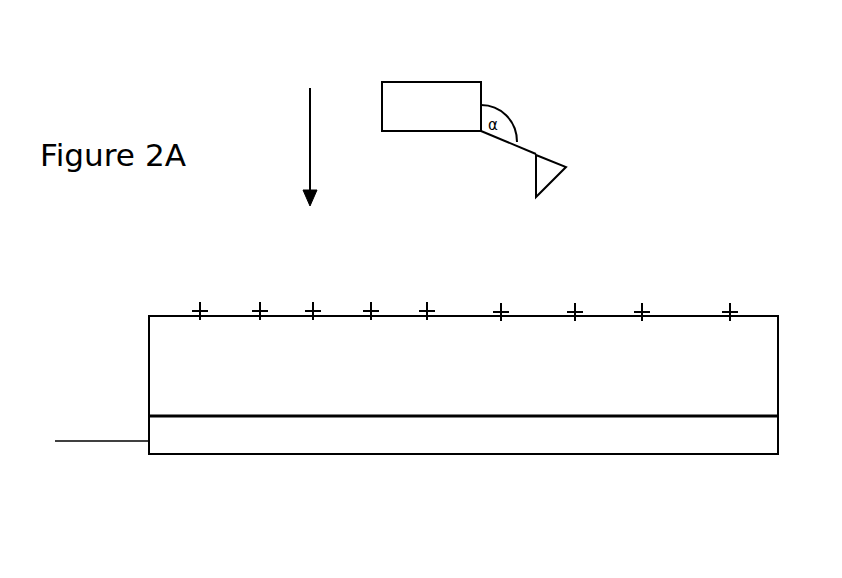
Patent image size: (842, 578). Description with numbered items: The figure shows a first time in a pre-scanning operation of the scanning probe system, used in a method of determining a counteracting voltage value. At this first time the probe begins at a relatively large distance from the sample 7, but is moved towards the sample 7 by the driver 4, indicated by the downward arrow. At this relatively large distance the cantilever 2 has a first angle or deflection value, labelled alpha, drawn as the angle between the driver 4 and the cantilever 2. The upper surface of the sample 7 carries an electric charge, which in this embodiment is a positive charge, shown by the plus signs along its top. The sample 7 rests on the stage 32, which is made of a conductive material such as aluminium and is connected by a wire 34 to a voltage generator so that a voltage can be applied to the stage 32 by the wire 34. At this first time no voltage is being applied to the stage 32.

The driver 4 is at (398, 82).
The cantilever 2 is at (533, 153).
The sample 7 is at (146, 342).
The stage 32 is at (222, 453).
The wire 34 is at (78, 438).